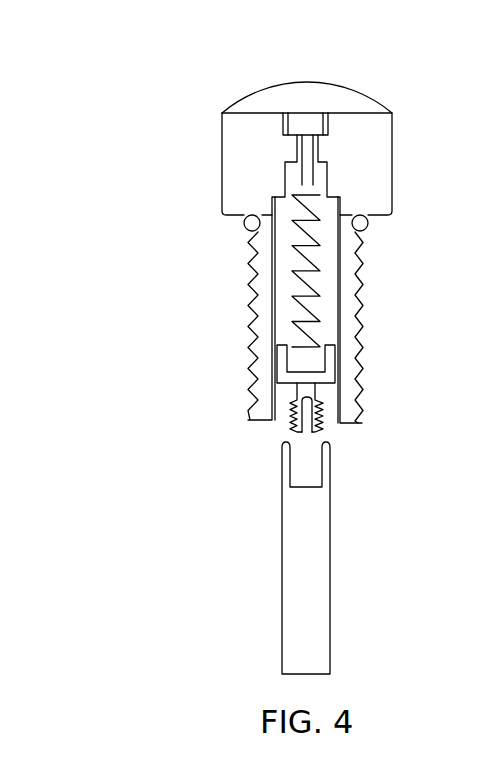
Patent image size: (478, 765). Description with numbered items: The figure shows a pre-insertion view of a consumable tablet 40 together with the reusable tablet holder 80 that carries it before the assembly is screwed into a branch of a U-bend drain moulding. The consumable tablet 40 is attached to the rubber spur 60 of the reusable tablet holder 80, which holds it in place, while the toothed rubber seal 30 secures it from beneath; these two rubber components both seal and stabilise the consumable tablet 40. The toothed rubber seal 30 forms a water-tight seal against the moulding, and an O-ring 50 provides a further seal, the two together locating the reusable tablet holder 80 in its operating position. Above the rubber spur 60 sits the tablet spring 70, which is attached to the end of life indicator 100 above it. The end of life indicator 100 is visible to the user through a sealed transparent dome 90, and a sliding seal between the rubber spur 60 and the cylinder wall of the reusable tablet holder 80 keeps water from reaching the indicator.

The toothed rubber seal 30 is at (352, 357).
The consumable tablet 40 is at (295, 568).
The O-ring 50 is at (249, 231).
The rubber spur 60 is at (292, 375).
The tablet spring 70 is at (310, 283).
The reusable tablet holder 80 is at (245, 158).
The sealed transparent dome 90 is at (347, 100).
The end of life indicator 100 is at (305, 120).